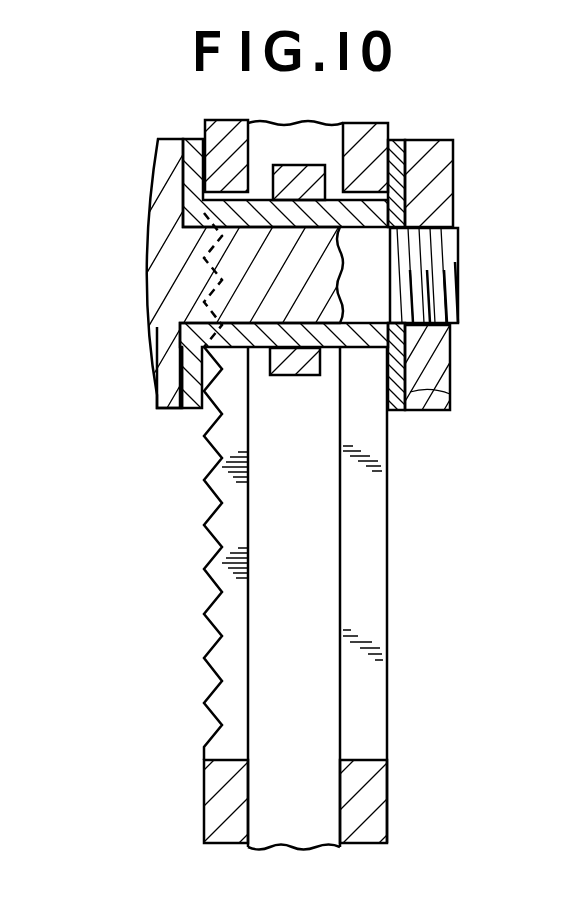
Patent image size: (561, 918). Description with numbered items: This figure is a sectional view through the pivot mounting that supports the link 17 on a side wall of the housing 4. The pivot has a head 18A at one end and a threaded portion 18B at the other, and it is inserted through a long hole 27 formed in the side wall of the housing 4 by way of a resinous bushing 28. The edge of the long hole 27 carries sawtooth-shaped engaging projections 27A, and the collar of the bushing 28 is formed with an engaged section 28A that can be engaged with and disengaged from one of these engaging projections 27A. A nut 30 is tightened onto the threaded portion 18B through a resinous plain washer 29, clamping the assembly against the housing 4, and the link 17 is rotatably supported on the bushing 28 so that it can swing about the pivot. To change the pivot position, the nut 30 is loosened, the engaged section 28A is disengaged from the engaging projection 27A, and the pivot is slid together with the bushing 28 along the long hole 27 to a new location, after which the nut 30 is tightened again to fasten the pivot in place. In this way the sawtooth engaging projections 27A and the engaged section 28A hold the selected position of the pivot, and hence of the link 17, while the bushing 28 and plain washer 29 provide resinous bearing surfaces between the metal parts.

The housing 4 is at (362, 805).
The link 17 is at (298, 372).
The head 18A is at (157, 178).
The threaded portion 18B is at (438, 297).
The long hole 27 is at (368, 578).
The engaging projection 27A is at (210, 622).
The bushing 28 is at (360, 347).
The engaged section 28A is at (153, 397).
The plain washer 29 is at (440, 392).
The nut 30 is at (432, 350).